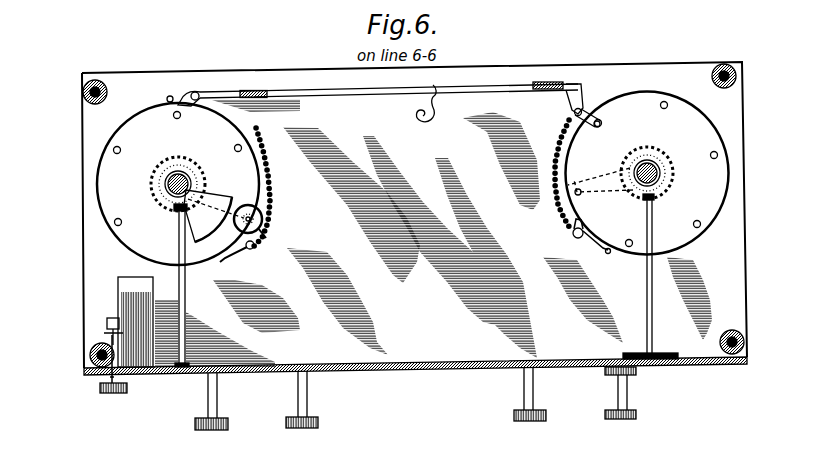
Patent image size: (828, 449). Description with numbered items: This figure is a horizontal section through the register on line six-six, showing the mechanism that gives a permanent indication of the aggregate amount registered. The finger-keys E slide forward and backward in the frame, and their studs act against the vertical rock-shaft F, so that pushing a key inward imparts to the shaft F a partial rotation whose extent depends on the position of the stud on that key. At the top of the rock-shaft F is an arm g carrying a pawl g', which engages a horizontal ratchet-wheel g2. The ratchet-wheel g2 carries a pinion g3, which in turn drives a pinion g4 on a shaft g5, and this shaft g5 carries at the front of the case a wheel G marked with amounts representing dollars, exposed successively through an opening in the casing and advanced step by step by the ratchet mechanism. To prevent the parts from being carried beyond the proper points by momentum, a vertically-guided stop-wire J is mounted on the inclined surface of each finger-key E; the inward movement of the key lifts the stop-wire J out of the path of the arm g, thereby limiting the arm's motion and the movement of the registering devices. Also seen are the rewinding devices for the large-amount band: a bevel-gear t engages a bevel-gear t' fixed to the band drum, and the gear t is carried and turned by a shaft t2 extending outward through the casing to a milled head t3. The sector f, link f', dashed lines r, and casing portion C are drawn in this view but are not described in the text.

The arm g is at (412, 171).
The horizontal ratchet-wheel g2 is at (97, 205).
The pinion g3 is at (203, 175).
The pinion g4 is at (174, 209).
The shaft g5 is at (186, 298).
The pawl g' is at (415, 233).
The vertical rock-shaft F is at (181, 180).
The toothed sector f is at (214, 222).
The link f' is at (280, 224).
The stop-wire J is at (271, 158).
The dashed position lines r is at (600, 181).
The casing box C is at (128, 321).
The bevel-gear t is at (95, 334).
The bevel-gear t' is at (109, 309).
The shaft t2 is at (95, 382).
The milled head t3 is at (117, 391).
The wheel G is at (167, 377).
The finger-keys E is at (415, 398).